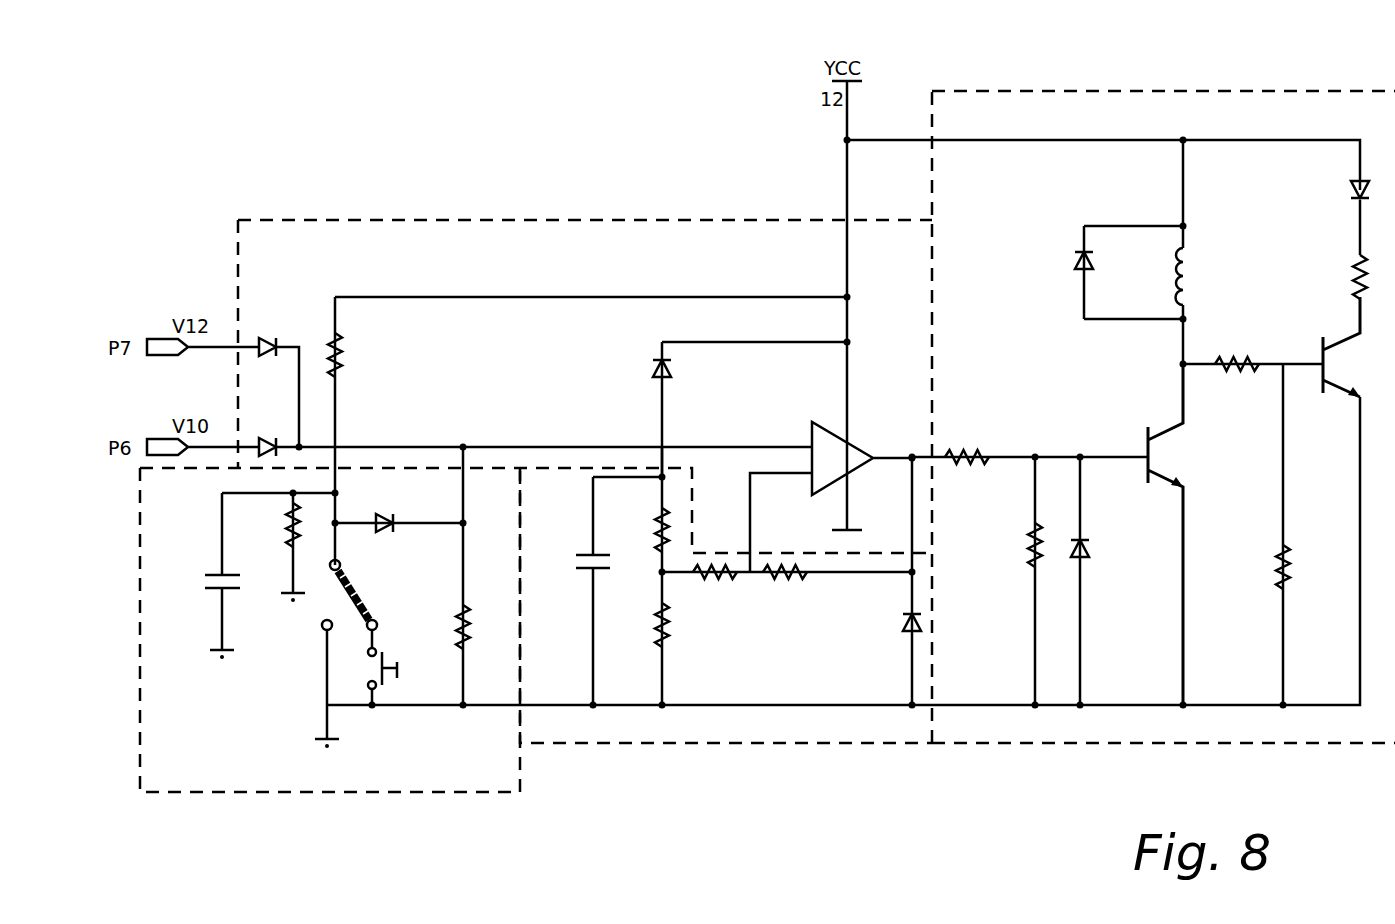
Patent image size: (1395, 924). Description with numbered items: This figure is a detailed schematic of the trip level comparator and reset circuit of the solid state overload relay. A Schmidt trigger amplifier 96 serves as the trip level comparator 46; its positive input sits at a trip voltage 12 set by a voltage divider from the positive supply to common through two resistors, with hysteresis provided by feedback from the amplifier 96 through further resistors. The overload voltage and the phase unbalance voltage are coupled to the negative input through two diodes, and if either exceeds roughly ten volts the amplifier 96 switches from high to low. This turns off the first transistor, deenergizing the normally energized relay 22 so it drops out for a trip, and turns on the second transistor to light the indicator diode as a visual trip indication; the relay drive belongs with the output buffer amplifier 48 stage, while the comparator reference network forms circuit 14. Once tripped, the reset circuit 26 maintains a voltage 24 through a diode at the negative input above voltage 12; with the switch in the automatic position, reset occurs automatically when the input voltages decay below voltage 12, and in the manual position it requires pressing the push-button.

The trip voltage 12 is at (750, 473).
The comparator reference circuit 14 is at (782, 723).
The relay 22 is at (1148, 112).
The voltage 24 is at (335, 437).
The reset circuit 26 is at (465, 772).
The trip level comparator 46 is at (535, 250).
The output buffer amplifier 48 is at (988, 725).
The Schmidt trigger amplifier 96 is at (832, 437).